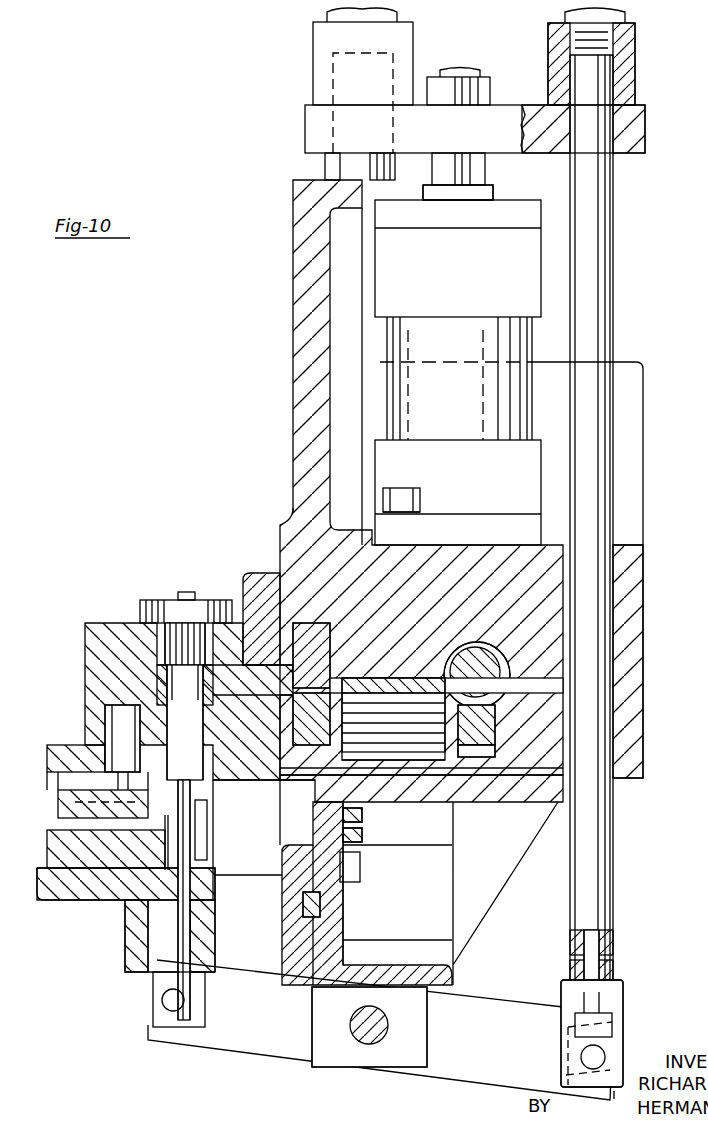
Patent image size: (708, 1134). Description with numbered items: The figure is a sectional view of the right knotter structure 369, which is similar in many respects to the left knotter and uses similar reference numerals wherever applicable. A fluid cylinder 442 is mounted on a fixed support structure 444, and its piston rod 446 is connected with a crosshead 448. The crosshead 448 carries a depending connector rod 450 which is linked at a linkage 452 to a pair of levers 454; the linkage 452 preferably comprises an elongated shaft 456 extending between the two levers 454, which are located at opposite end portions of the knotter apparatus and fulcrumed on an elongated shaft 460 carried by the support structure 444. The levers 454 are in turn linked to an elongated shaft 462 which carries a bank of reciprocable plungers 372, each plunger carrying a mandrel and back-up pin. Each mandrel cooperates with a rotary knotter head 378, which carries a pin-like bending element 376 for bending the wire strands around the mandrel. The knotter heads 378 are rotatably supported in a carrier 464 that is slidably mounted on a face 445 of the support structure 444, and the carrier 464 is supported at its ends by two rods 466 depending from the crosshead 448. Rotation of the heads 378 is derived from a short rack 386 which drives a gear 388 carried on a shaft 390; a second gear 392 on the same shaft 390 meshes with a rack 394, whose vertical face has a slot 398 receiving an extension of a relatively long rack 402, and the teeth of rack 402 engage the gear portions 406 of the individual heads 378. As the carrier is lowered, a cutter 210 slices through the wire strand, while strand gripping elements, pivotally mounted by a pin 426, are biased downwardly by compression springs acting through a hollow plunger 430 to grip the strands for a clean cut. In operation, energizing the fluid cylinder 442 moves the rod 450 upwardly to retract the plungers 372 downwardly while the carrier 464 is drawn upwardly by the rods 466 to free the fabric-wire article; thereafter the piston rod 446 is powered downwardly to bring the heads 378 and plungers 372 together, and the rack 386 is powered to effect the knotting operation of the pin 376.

The crosshead 448 is at (648, 127).
The piston rod 446 is at (458, 160).
The rods 466 is at (325, 163).
The connector rod 450 is at (598, 310).
The right knotter structure 369 is at (250, 372).
The fluid cylinder 442 is at (387, 410).
The support structure 444 is at (298, 462).
The face 445 is at (280, 548).
The slot 398 is at (250, 588).
The carrier 464 is at (115, 628).
The gear portions 406 is at (165, 675).
The rotary head 378 is at (165, 705).
The hollow plunger 430 is at (118, 730).
The rack 402 is at (253, 680).
The rack 394 is at (325, 652).
The shaft 390 is at (372, 698).
The rack 386 is at (490, 665).
The gear 388 is at (480, 755).
The second gear 392 is at (275, 780).
The pin 426 is at (75, 806).
The cutter 210 is at (215, 830).
The bending element 376 is at (195, 848).
The plungers 372 is at (160, 940).
The shaft 462 is at (160, 1000).
The shaft 460 is at (360, 1040).
The levers 454 is at (470, 1070).
The shaft 456 is at (580, 1058).
The linkage 452 is at (625, 1040).